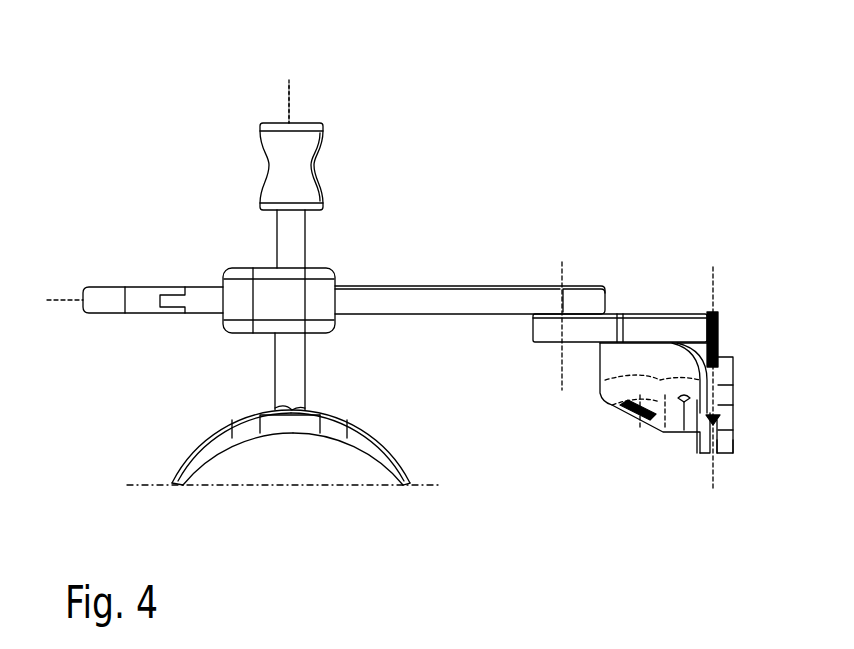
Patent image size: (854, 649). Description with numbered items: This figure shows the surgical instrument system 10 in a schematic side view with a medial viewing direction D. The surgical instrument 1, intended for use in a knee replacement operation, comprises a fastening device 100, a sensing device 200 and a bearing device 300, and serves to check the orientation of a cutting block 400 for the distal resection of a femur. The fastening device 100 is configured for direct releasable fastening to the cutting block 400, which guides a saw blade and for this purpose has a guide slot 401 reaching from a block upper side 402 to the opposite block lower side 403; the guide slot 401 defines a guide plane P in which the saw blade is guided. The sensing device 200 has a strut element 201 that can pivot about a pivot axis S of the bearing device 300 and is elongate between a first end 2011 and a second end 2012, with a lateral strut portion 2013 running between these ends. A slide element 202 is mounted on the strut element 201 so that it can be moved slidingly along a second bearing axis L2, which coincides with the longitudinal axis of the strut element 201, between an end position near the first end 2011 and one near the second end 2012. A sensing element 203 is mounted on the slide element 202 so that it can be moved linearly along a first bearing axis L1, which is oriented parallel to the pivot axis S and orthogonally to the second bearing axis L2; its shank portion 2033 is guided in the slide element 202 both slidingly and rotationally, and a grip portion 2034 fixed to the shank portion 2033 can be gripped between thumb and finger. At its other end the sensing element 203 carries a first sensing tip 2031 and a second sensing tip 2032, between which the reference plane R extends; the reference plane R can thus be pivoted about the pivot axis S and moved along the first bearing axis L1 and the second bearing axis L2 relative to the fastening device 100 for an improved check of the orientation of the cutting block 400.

The assembly 10 is at (582, 91).
The surgical instrument 1 is at (500, 167).
The fastening device 100 is at (637, 282).
The sensing device 200 is at (172, 390).
The bearing device 300 is at (467, 242).
The strut element 201 is at (195, 297).
The first end 2011 is at (583, 293).
The second end 2012 is at (115, 295).
The lateral strut portion 2013 is at (413, 303).
The slide element 202 is at (227, 332).
The sensing element 203 is at (348, 147).
The shank portion 2033 is at (280, 253).
The grip portion 2034 is at (262, 128).
The first sensing tip 2031 is at (172, 483).
The second sensing tip 2032 is at (410, 483).
The cutting block 400 is at (638, 417).
The guide slot 401 is at (722, 356).
The block upper side 402 is at (693, 338).
The block lower side 403 is at (727, 455).
The direction D is at (290, 90).
The first bearing axis L1 is at (292, 103).
The second bearing axis L2 is at (73, 300).
The pivot axis S is at (562, 257).
The guide plane P is at (713, 267).
The reference plane R is at (295, 483).